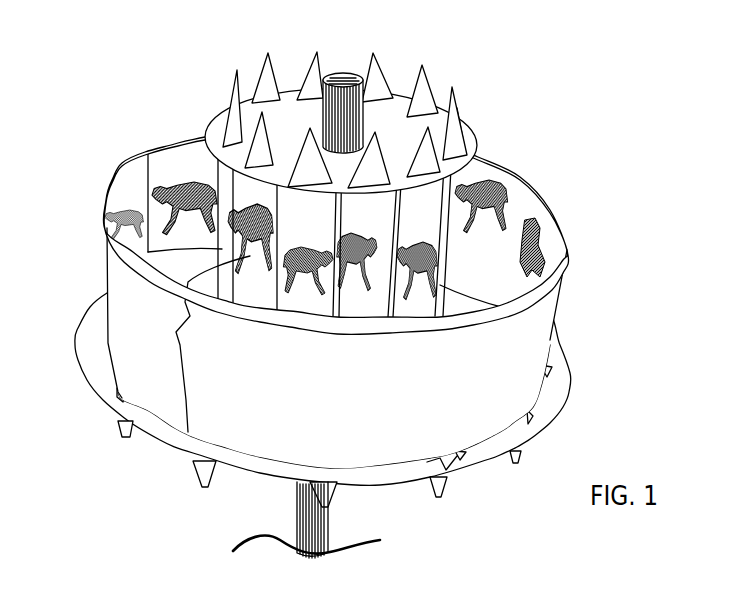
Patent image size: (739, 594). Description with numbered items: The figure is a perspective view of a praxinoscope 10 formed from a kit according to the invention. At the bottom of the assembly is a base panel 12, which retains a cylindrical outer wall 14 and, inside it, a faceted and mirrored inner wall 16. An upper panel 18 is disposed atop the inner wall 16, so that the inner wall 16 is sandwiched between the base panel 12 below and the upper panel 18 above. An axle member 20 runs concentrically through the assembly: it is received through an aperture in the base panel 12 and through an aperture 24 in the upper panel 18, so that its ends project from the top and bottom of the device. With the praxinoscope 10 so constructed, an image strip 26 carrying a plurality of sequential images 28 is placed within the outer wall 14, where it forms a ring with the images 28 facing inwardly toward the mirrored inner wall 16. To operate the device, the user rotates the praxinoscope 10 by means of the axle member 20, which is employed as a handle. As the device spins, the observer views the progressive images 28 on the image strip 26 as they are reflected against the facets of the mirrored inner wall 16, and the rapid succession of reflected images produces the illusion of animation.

The praxinoscope 10 is at (569, 152).
The base panel 12 is at (157, 443).
The cylindrical outer wall 14 is at (148, 350).
The faceted and mirrored inner wall 16 is at (150, 253).
The upper panel 18 is at (215, 116).
The axle member 20 is at (297, 513).
The aperture 24 is at (344, 74).
The image strip 26 is at (122, 166).
The sequential images 28 is at (188, 188).